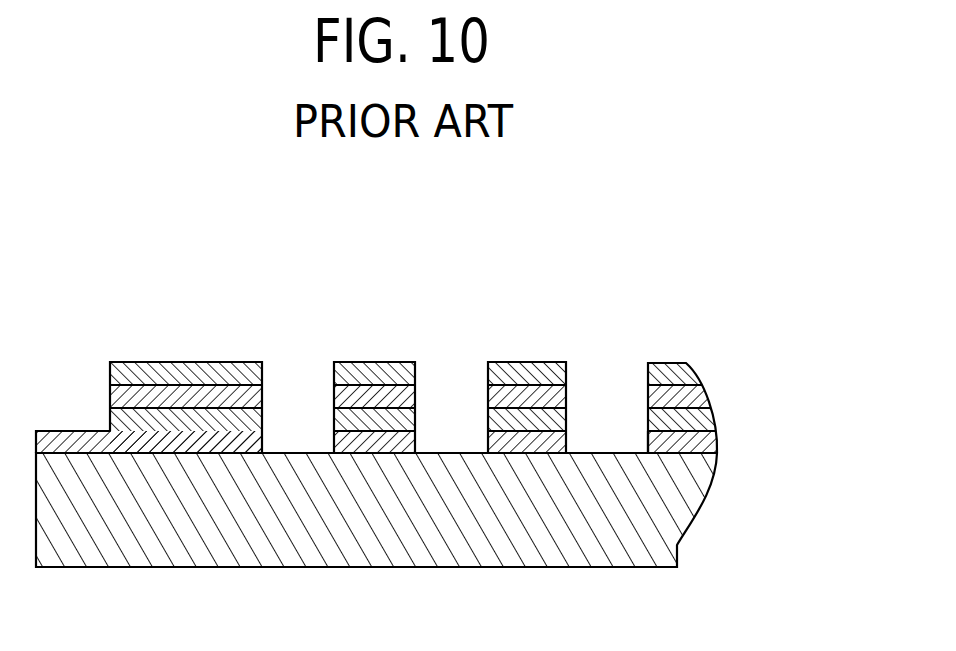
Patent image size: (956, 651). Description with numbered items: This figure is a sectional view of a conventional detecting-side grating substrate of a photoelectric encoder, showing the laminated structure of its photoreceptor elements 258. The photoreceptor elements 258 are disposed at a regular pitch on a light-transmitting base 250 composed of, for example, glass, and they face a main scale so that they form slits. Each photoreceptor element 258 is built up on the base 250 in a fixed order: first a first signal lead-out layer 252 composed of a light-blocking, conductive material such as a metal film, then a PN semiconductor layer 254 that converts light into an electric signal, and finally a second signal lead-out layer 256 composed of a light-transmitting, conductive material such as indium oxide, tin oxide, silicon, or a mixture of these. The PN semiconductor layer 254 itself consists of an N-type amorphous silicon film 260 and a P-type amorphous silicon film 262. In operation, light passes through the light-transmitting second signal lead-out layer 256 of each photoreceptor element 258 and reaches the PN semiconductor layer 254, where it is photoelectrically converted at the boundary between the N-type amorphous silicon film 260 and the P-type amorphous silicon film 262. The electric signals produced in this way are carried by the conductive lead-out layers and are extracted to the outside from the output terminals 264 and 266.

The light-transmitting base 250 is at (662, 512).
The first signal lead-out layer 252 is at (715, 448).
The PN semiconductor layer 254 is at (771, 397).
The second signal lead-out layer 256 is at (769, 354).
The photoreceptor elements 258 is at (380, 355).
The N-type amorphous silicon film 260 is at (713, 421).
The P-type amorphous silicon film 262 is at (703, 397).
The output terminal 264 is at (197, 363).
The output terminal 266 is at (82, 431).